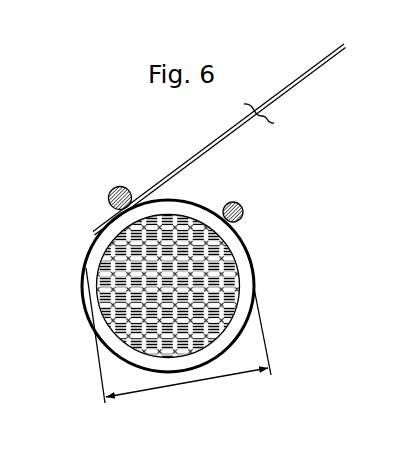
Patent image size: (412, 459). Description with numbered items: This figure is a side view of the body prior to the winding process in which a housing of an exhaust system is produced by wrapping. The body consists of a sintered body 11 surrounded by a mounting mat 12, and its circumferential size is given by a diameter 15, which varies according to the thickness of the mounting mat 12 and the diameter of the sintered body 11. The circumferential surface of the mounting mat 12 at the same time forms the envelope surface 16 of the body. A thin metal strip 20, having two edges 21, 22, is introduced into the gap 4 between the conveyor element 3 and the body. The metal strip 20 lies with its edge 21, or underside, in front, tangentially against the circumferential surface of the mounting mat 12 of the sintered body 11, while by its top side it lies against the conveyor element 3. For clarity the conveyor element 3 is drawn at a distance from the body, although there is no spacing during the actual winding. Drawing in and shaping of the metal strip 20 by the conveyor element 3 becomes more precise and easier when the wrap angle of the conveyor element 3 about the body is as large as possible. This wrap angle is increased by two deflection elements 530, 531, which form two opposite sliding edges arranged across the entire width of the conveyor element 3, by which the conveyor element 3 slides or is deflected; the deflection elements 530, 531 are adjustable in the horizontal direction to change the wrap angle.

The conveyor element 3 is at (256, 263).
The gap 4 is at (138, 191).
The sintered body 11 is at (231, 253).
The mounting mat 12 is at (92, 270).
The diameter 15 is at (188, 383).
The envelope surface 16 is at (208, 205).
The metal strip 20 is at (205, 151).
The edge 21 is at (109, 221).
The edge 22 is at (342, 54).
The deflection element 530 is at (110, 188).
The deflection element 531 is at (243, 207).